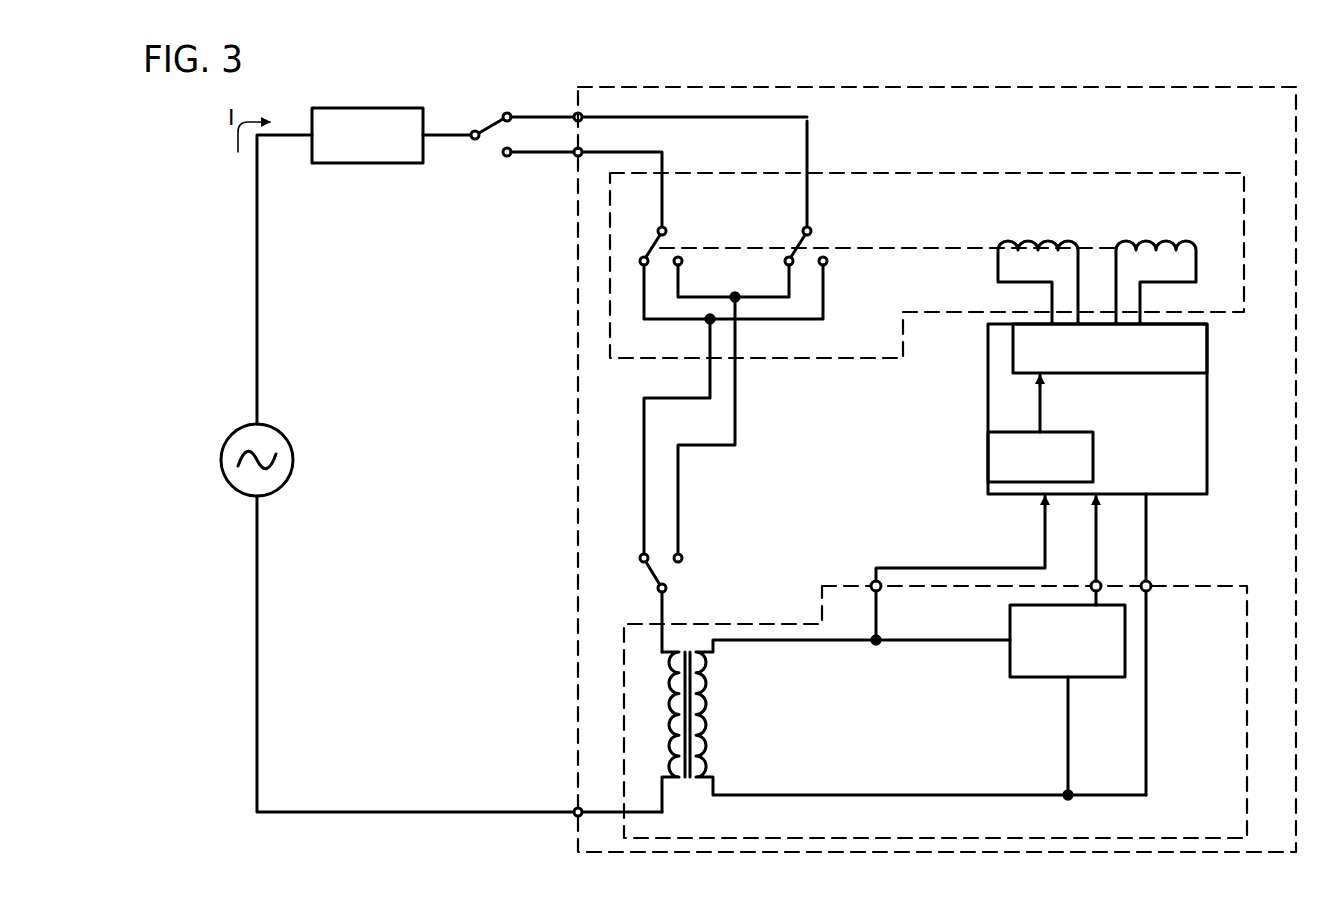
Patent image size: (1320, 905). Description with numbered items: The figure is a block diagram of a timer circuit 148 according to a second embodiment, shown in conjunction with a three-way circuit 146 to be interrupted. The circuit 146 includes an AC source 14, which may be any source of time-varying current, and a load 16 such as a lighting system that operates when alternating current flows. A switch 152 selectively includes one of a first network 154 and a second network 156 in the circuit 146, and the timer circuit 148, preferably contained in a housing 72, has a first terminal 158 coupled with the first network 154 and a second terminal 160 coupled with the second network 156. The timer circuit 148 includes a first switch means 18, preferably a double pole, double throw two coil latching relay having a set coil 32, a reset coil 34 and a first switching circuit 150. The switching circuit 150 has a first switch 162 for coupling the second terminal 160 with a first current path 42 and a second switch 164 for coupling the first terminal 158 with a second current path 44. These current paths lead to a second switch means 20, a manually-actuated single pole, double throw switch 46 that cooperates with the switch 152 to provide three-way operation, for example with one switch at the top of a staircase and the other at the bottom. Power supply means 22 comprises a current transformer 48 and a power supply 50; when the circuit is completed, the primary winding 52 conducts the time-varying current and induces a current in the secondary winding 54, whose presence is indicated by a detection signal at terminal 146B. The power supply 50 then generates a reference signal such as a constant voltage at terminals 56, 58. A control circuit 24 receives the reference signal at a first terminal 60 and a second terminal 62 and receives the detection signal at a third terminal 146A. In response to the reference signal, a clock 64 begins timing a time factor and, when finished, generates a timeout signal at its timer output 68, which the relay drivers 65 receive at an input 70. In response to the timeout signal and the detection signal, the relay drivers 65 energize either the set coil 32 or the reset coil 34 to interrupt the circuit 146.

The AC source 14 is at (240, 437).
The load 16 is at (358, 108).
The first switch means 18 is at (930, 172).
The second switch means 20 is at (640, 583).
The power supply means 22 is at (810, 620).
The control circuit 24 is at (986, 372).
The set coil 32 is at (1008, 238).
The reset coil 34 is at (1120, 238).
The first current path 42 is at (643, 472).
The second current path 44 is at (680, 486).
The single pole, double throw switch 46 is at (670, 580).
The current transformer 48 is at (687, 782).
The power supply 50 is at (1008, 676).
The primary winding 52 is at (668, 722).
The secondary winding 54 is at (706, 772).
The terminal 56 is at (1092, 582).
The terminal 58 is at (1150, 592).
The first terminal 60 is at (1102, 502).
The second terminal 62 is at (1148, 504).
The clock 64 is at (1093, 460).
The relay drivers 65 is at (1188, 356).
The timer output 68 is at (1042, 430).
The input 70 is at (1046, 398).
The housing 72 is at (1026, 88).
The three-way circuit 146 is at (473, 70).
The third terminal 146A is at (1038, 518).
The terminal 146B is at (874, 580).
The timer circuit 148 is at (868, 86).
The first switching circuit 150 is at (727, 240).
The switch 152 is at (492, 122).
The first network 154 is at (538, 113).
The second network 156 is at (528, 160).
The first terminal 158 is at (575, 110).
The second terminal 160 is at (576, 160).
The first switch 162 is at (658, 248).
The second switch 164 is at (805, 250).